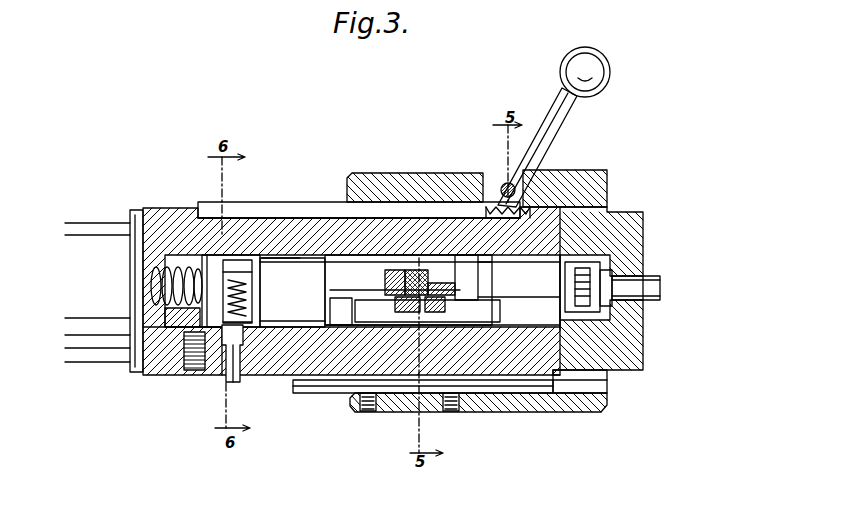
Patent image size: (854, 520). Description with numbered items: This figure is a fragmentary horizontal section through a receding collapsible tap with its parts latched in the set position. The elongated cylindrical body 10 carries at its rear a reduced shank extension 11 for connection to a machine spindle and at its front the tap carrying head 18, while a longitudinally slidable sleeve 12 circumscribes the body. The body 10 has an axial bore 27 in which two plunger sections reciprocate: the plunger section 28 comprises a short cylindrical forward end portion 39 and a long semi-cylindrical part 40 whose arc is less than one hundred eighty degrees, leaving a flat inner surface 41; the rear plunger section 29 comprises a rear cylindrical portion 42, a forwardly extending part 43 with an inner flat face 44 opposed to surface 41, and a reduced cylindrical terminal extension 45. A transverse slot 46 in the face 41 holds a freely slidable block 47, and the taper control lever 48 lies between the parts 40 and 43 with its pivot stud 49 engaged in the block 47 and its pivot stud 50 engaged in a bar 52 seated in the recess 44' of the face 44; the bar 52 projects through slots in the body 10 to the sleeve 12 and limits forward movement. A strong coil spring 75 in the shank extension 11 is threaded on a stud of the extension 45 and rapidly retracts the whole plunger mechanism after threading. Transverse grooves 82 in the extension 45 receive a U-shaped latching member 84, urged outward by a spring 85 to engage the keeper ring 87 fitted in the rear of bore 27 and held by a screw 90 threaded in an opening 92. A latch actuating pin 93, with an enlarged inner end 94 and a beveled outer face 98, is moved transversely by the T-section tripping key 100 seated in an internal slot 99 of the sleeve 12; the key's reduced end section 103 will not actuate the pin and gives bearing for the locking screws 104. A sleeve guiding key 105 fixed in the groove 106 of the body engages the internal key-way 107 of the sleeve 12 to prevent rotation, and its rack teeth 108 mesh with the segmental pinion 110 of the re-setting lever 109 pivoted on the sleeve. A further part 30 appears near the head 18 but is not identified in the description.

The body 10 is at (158, 214).
The shank extension 11 is at (124, 223).
The sleeve 12 is at (410, 178).
The tap carrying head 18 is at (614, 215).
The axial bore 27 is at (172, 318).
The plunger section 28 is at (562, 258).
The rear plunger section 29 is at (278, 258).
The outlet fitting 30 is at (636, 288).
The forward end portion 39 is at (480, 293).
The semi-cylindrical part 40 is at (364, 302).
The flat inner surface 41 is at (482, 297).
The rear cylindrical portion 42 is at (306, 306).
The forwardly extending part 43 is at (388, 273).
The inner flat face 44 is at (382, 279).
The recess 44' is at (366, 288).
The reduced cylindrical terminal extension 45 is at (214, 258).
The transverse slot 46 is at (366, 313).
The block 47 is at (425, 313).
The taper control lever 48 is at (456, 268).
The pivot stud 49 is at (440, 321).
The pivot stud 50 is at (421, 268).
The bar 52 is at (427, 282).
The coil spring 75 is at (146, 282).
The transverse grooves 82 is at (242, 262).
The latching member 84 is at (244, 272).
The spring 85 is at (250, 292).
The keeper ring 87 is at (136, 363).
The screw 90 is at (184, 358).
The opening 92 is at (204, 368).
The latch actuating pin 93 is at (229, 380).
The enlarged inner end 94 is at (227, 326).
The beveled face 98 is at (239, 380).
The slot 99 is at (590, 388).
The tripping key 100 is at (505, 393).
The end section 103 is at (310, 391).
The locking screws 104 is at (366, 412).
The sleeve guiding key 105 is at (312, 208).
The longitudinal groove 106 is at (356, 216).
The internal key-way 107 is at (580, 197).
The rack teeth 108 is at (535, 168).
The re-setting lever 109 is at (578, 117).
The segmental pinion 110 is at (502, 186).